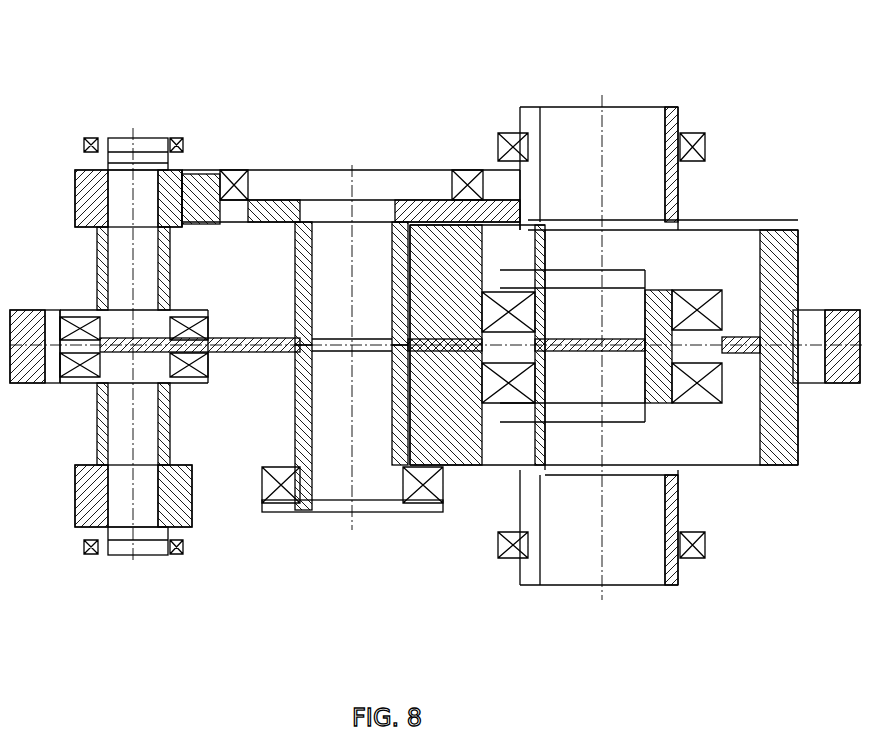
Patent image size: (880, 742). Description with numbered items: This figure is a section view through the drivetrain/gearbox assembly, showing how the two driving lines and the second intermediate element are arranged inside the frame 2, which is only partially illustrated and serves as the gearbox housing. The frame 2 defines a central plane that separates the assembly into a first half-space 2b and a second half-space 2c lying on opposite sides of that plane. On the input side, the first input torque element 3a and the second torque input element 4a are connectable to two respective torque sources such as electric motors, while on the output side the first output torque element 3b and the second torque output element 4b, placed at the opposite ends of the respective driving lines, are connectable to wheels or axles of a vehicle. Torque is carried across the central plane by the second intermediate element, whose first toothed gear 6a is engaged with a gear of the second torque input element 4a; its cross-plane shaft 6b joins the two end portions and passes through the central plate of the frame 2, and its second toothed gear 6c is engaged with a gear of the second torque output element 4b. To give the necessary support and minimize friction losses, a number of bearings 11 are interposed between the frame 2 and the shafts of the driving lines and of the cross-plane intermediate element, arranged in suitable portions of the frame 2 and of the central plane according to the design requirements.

The frame 2 is at (225, 345).
The first half-space 2b is at (263, 428).
The second half-space 2c is at (248, 276).
The first input torque element 3a is at (97, 503).
The first output torque element 3b is at (670, 120).
The second torque input element 4a is at (107, 185).
The second torque output element 4b is at (670, 497).
The first toothed gear 6a is at (437, 210).
The cross-plane shaft 6b is at (300, 277).
The second toothed gear 6c is at (297, 427).
The bearings 11 is at (233, 173).